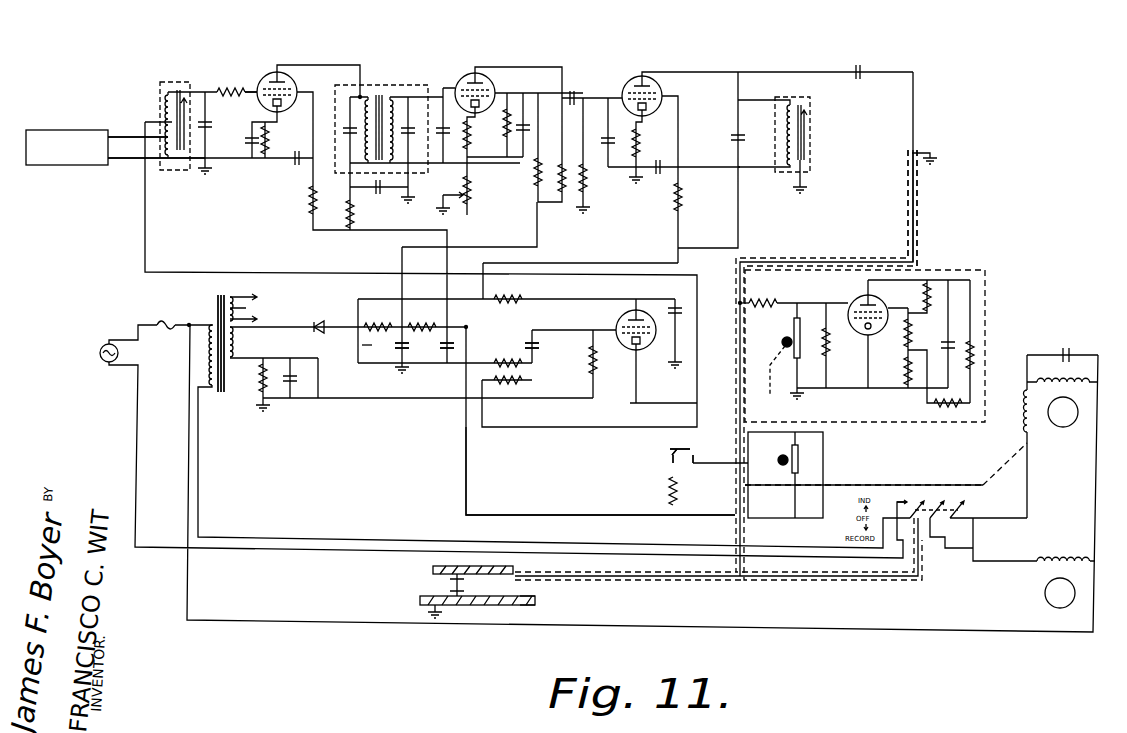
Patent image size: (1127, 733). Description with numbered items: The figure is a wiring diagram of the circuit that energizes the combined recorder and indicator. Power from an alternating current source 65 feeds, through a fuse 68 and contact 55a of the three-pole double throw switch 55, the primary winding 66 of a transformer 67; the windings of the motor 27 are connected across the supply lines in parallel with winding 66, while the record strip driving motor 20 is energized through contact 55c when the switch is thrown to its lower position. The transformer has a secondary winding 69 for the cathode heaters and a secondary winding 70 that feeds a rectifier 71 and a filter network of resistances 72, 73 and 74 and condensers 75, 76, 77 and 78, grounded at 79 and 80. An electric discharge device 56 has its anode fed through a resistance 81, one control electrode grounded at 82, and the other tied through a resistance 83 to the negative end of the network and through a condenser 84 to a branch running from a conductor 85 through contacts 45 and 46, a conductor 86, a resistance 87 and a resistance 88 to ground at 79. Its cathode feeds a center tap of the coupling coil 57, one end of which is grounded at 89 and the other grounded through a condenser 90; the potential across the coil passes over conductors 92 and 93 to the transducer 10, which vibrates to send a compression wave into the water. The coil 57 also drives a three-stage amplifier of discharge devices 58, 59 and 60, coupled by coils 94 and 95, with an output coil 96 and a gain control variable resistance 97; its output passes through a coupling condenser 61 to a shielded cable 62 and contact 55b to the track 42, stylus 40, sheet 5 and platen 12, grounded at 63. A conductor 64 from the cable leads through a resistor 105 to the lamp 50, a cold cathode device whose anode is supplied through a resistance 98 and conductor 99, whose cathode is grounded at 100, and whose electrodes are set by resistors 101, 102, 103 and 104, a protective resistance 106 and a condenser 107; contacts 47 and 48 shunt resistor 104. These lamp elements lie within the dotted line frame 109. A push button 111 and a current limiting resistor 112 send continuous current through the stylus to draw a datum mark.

The transducer 10 is at (86, 128).
The conductor 92 is at (130, 136).
The conductor 93 is at (125, 160).
The coupling coil 57 is at (162, 108).
The condenser 90 is at (208, 122).
The ground 89 is at (210, 172).
The electric discharge device 58 is at (262, 76).
The coupling coil 94 is at (363, 97).
The coupling coil 95 is at (394, 100).
The electrical discharge device 59 is at (468, 74).
The variable resistance 97 is at (470, 186).
The electrical discharge device 60 is at (630, 80).
The output coil 96 is at (790, 100).
The coupling condenser 61 is at (862, 70).
The shielded cable 62 is at (914, 204).
The alternating current source 65 is at (100, 348).
The fuse 68 is at (166, 322).
The transformer 67 is at (216, 304).
The primary winding 66 is at (206, 360).
The secondary winding 69 is at (250, 306).
The secondary winding 70 is at (236, 342).
The rectifier 71 is at (320, 320).
The resistance 72 is at (378, 323).
The resistance 73 is at (423, 323).
The condenser 75 is at (356, 345).
The condenser 76 is at (394, 346).
The condenser 77 is at (439, 346).
The ground 79 is at (396, 369).
The resistance 74 is at (260, 384).
The condenser 78 is at (292, 392).
The ground 80 is at (266, 412).
The resistance 81 is at (510, 297).
The conductor 85 is at (469, 329).
The resistance 88 is at (500, 358).
The condenser 84 is at (540, 344).
The resistance 83 is at (588, 362).
The resistance 87 is at (510, 383).
The electric discharge device 56 is at (618, 322).
The ground 82 is at (678, 356).
The conductor 86 is at (584, 430).
The push button 111 is at (668, 448).
The current limiting resistor 112 is at (666, 490).
The moving contact 45 is at (778, 458).
The contact 46 is at (800, 452).
The moving contact 47 is at (785, 337).
The contact 48 is at (801, 338).
The conductor 64 is at (742, 300).
The resistor 105 is at (772, 300).
The resistor 104 is at (828, 346).
The ground connection 100 is at (802, 396).
The lamp 50 is at (862, 298).
The resistor 103 is at (910, 330).
The resistor 102 is at (905, 373).
The protective resistance 106 is at (925, 298).
The condenser 107 is at (950, 338).
The resistance 98 is at (975, 340).
The resistor 101 is at (930, 405).
The dotted line frame 109 is at (988, 288).
The conductor 99 is at (872, 426).
The switch contact 55a is at (911, 504).
The switch contact 55b is at (936, 498).
The switch contact 55c is at (962, 508).
The three-pole double throw switch 55 is at (962, 494).
The motor 27 is at (1074, 426).
The record strip driving motor 20 is at (1045, 595).
The track 42 is at (432, 570).
The stylus 40 is at (450, 585).
The ground 63 is at (420, 604).
The sheet 5 is at (536, 597).
The platen 12 is at (538, 605).